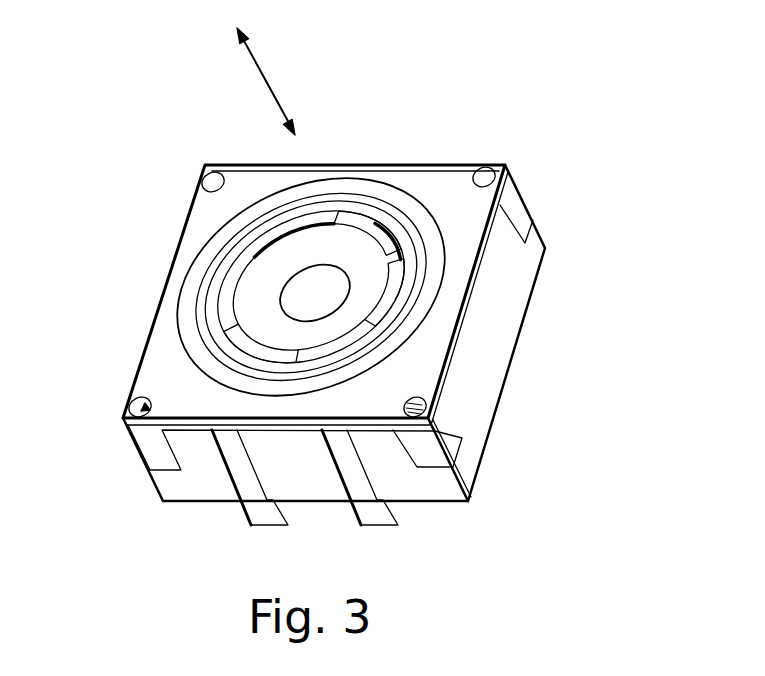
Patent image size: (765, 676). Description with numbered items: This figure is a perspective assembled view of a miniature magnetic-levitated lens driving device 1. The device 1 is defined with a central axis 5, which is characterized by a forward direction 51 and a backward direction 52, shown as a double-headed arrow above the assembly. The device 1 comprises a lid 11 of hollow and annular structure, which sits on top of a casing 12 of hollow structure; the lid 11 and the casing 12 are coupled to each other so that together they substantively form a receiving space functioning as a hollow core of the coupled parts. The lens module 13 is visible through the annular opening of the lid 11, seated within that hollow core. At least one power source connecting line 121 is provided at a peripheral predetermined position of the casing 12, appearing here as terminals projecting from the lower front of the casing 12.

The miniature magnetic-levitated lens driving device 1 is at (136, 149).
The central axis 5 is at (268, 80).
The forward direction 51 is at (246, 34).
The backward direction 52 is at (290, 113).
The lid 11 is at (430, 358).
The casing 12 is at (505, 295).
The power source connecting line 121 is at (265, 513).
The lens module 13 is at (247, 288).